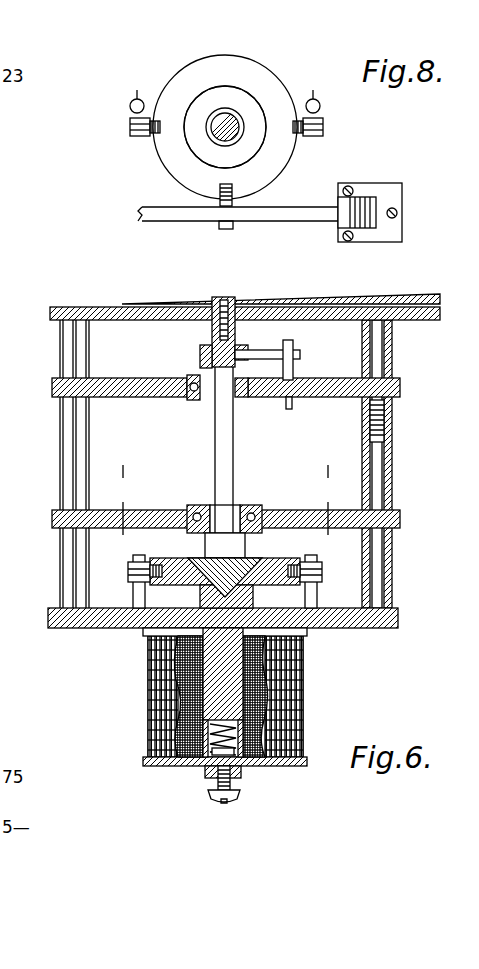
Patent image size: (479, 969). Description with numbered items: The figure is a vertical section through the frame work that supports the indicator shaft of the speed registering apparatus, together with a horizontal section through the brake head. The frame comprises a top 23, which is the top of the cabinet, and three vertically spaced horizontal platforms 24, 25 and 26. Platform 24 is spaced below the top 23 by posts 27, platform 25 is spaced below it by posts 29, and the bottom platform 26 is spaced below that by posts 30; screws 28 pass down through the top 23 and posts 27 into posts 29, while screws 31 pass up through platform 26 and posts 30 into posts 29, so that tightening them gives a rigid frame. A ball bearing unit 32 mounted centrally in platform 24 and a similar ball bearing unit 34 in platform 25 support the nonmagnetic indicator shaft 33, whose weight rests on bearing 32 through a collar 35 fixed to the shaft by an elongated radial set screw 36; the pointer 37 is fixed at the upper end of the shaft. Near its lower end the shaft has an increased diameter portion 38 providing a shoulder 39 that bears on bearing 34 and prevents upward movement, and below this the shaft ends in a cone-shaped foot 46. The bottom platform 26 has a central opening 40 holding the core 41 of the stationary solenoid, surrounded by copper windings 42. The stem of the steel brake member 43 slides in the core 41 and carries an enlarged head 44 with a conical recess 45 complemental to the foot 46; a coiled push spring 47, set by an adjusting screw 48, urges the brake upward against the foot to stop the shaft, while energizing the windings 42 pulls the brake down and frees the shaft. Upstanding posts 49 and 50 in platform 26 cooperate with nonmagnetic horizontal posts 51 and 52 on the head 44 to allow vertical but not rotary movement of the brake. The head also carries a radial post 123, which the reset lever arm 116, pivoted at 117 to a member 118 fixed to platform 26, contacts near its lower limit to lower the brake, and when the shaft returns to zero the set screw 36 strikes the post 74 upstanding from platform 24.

In FIG. 6, the top 23 is at (70, 307).
In FIG. 6, the platform 24 is at (55, 385).
In FIG. 6, the platform 25 is at (55, 512).
In FIG. 6, the bottom platform 26 is at (52, 610).
In FIG. 6, the posts 27 is at (392, 346).
In FIG. 6, the screws 28 is at (382, 366).
In FIG. 6, the posts 29 is at (392, 440).
In FIG. 6, the posts 30 is at (392, 558).
In FIG. 6, the screws 31 is at (382, 581).
In FIG. 6, the ball bearing unit 32 is at (193, 375).
In FIG. 8, the indicator shaft 33 is at (235, 117).
In FIG. 6, the indicator shaft 33 is at (233, 433).
In FIG. 6, the ball bearing unit 34 is at (180, 500).
In FIG. 6, the collar 35 is at (200, 350).
In FIG. 6, the set screw 36 is at (268, 339).
In FIG. 6, the pointer 37 is at (318, 300).
In FIG. 8, the increased diameter portion 38 is at (205, 135).
In FIG. 6, the increased diameter portion 38 is at (205, 544).
In FIG. 6, the shoulder 39 is at (235, 540).
In FIG. 6, the central opening 40 is at (148, 633).
In FIG. 6, the core 41 is at (178, 659).
In FIG. 6, the windings 42 is at (178, 683).
In FIG. 6, the brake member 43 is at (243, 650).
In FIG. 8, the head 44 is at (176, 81).
In FIG. 6, the head 44 is at (278, 572).
In FIG. 6, the conical recess 45 is at (200, 597).
In FIG. 8, the cone-shaped foot 46 is at (248, 145).
In FIG. 6, the cone-shaped foot 46 is at (226, 580).
In FIG. 6, the push spring 47 is at (265, 727).
In FIG. 6, the adjusting screw 48 is at (210, 784).
In FIG. 8, the post 49 is at (317, 94).
In FIG. 6, the post 49 is at (317, 589).
In FIG. 8, the post 50 is at (128, 93).
In FIG. 6, the post 50 is at (133, 589).
In FIG. 8, the horizontal post 51 is at (323, 127).
In FIG. 6, the horizontal post 51 is at (318, 564).
In FIG. 8, the horizontal post 52 is at (130, 127).
In FIG. 6, the horizontal post 52 is at (130, 564).
In FIG. 6, the post 74 is at (292, 348).
In FIG. 8, the lever arm 116 is at (160, 221).
In FIG. 8, the pivot 117 is at (358, 200).
In FIG. 8, the member 118 is at (352, 238).
In FIG. 8, the radial post 123 is at (226, 229).